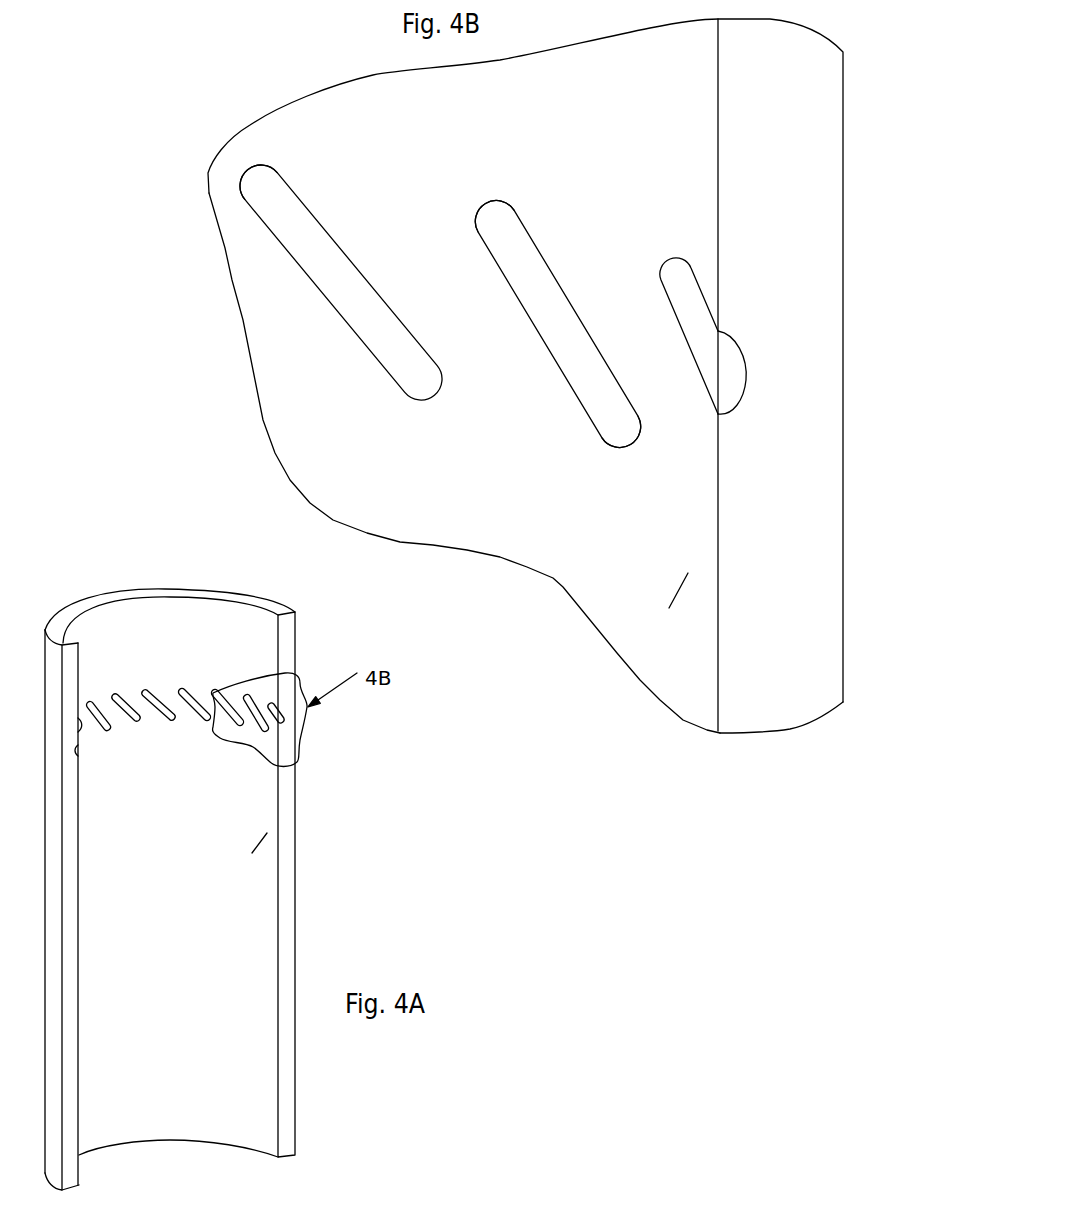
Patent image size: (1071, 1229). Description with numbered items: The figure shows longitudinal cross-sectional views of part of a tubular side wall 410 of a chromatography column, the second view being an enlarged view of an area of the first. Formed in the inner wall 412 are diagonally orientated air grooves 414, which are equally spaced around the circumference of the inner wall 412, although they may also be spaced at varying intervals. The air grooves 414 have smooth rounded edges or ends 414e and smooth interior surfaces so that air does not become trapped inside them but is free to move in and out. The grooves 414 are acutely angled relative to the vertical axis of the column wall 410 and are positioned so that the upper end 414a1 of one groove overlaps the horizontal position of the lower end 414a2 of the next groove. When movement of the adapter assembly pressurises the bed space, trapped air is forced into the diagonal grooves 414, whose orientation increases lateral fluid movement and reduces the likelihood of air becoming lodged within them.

In FIG. 4B, the tubular side wall 410 is at (792, 642).
In FIG. 4A, the tubular side wall 410 is at (293, 945).
In FIG. 4B, the inner wall 412 is at (669, 608).
In FIG. 4A, the inner wall 412 is at (252, 853).
In FIG. 4B, the air grooves 414 is at (597, 320).
In FIG. 4A, the air grooves 414 is at (248, 707).
In FIG. 4B, the rounded ends 414e is at (478, 202).
In FIG. 4B, the upper end 414a1 is at (667, 260).
In FIG. 4B, the lower end 414a2 is at (623, 448).